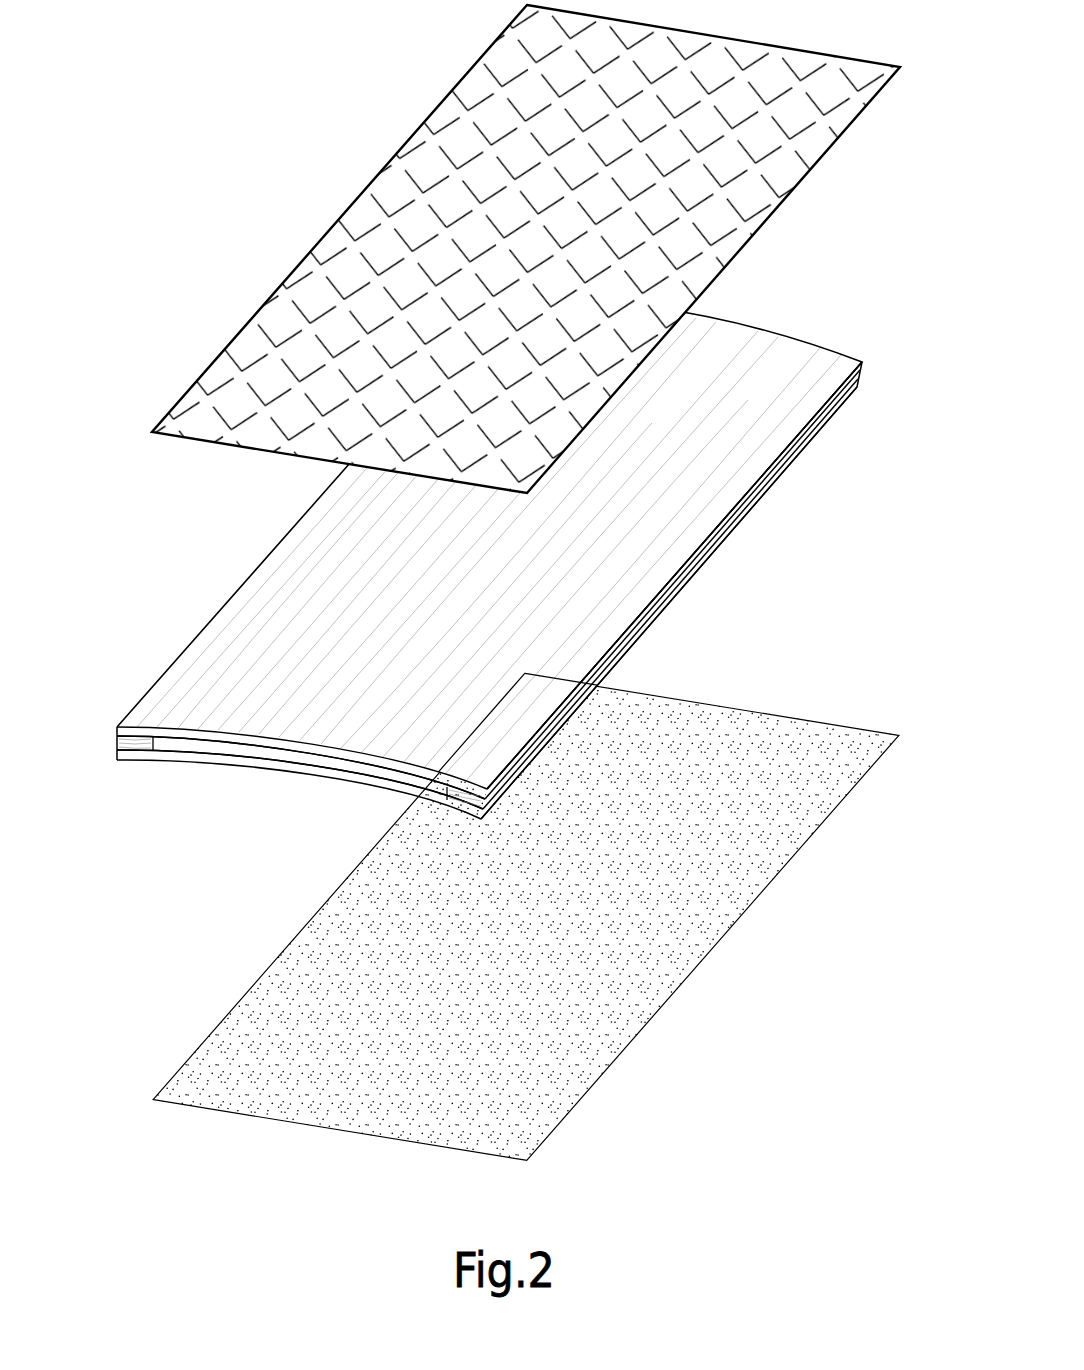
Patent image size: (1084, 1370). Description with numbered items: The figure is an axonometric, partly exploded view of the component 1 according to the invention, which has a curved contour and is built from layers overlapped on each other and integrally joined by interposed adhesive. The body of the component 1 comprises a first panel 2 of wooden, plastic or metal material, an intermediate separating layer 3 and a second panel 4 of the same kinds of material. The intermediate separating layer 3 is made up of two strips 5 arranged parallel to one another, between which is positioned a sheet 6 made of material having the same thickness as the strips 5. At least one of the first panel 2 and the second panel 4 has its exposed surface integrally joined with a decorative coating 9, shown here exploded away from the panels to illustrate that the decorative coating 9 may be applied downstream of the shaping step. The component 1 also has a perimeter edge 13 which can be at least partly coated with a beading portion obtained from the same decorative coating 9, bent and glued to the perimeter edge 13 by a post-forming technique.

The component 1 is at (501, 583).
The first panel 2 is at (190, 753).
The intermediate separating layer 3 is at (502, 623).
The second panel 4 is at (193, 729).
The strips 5 is at (113, 744).
The sheet 6 is at (290, 750).
The decorative coating 9 is at (370, 228).
The perimeter edge 13 is at (887, 391).